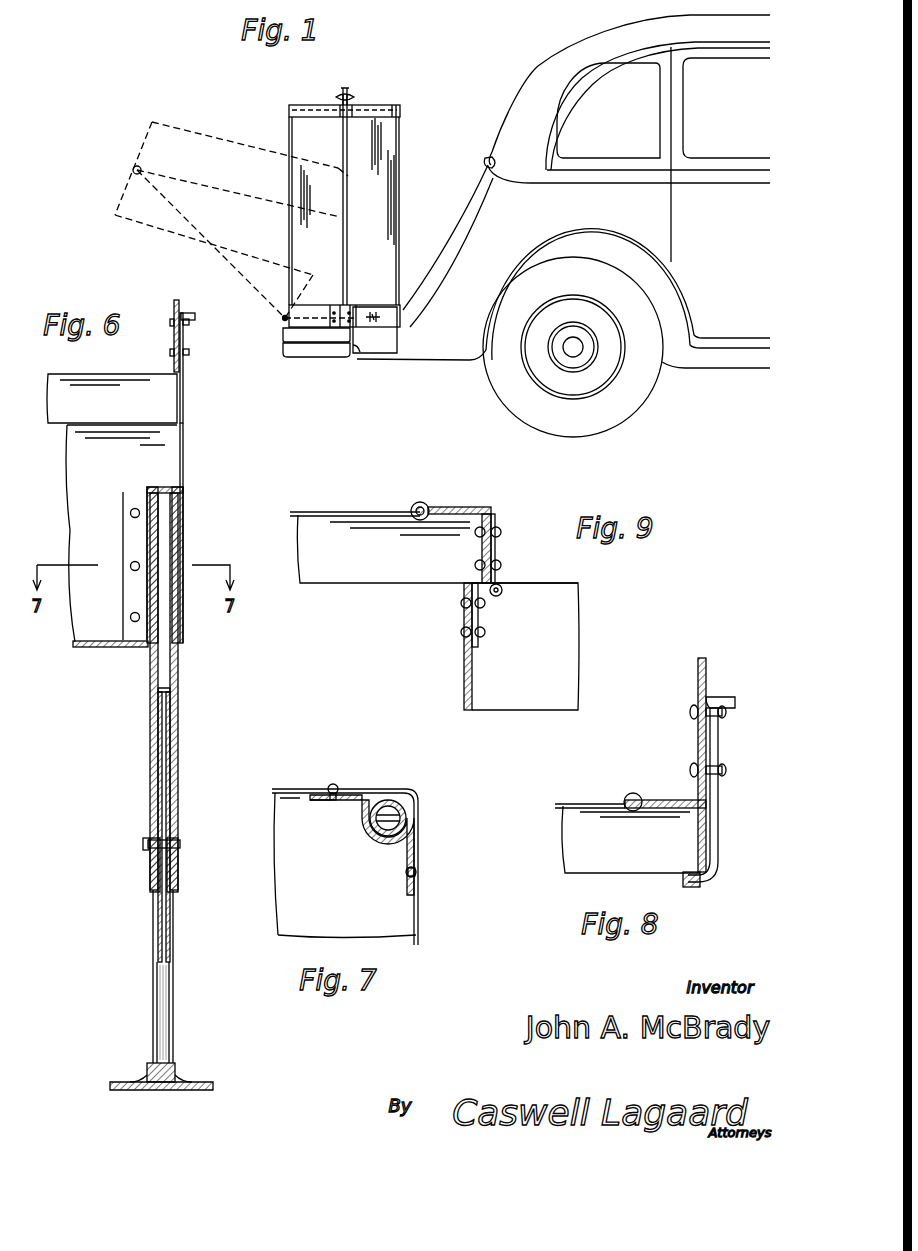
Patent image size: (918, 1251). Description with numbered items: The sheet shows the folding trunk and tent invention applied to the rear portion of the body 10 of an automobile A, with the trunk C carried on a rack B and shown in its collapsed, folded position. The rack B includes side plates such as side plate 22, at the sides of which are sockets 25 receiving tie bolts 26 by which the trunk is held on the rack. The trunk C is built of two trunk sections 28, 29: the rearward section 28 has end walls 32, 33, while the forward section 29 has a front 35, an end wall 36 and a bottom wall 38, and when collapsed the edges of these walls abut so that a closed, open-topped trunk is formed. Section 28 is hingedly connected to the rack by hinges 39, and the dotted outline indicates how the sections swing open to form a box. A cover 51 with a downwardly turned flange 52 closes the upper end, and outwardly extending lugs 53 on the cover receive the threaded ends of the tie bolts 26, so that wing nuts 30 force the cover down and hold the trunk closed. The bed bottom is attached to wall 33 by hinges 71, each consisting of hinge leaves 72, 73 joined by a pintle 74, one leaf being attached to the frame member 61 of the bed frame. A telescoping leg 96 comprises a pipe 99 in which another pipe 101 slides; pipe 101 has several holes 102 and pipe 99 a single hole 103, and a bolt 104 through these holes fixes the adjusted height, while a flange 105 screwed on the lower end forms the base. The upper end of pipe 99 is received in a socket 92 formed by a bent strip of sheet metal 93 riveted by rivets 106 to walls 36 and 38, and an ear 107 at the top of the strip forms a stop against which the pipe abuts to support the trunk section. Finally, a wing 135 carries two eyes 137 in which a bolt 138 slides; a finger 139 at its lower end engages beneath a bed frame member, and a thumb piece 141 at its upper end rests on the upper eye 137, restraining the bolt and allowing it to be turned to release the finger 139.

In FIG. 1, the automobile A is at (512, 113).
In FIG. 1, the rack B is at (368, 310).
In FIG. 1, the trunk C is at (290, 110).
In FIG. 1, the rear portion of the body 10 is at (470, 217).
In FIG. 1, the side plate 22 is at (367, 330).
In FIG. 1, the socket 25 is at (343, 323).
In FIG. 1, the tie bolt 26 is at (347, 227).
In FIG. 1, the trunk section 28 is at (300, 135).
In FIG. 1, the trunk section 29 is at (377, 168).
In FIG. 1, the wing nut 30 is at (344, 90).
In FIG. 1, the end wall 32 is at (310, 240).
In FIG. 9, the end wall 33 is at (466, 688).
In FIG. 6, the front 35 is at (98, 648).
In FIG. 7, the front 35 is at (300, 905).
In FIG. 1, the end wall 36 is at (360, 243).
In FIG. 6, the end wall 36 is at (92, 535).
In FIG. 7, the end wall 36 is at (282, 788).
In FIG. 6, the bottom wall 38 is at (183, 450).
In FIG. 7, the bottom wall 38 is at (418, 924).
In FIG. 1, the hinge 39 is at (312, 326).
In FIG. 1, the cover 51 is at (365, 110).
In FIG. 1, the flange 52 is at (392, 113).
In FIG. 1, the lug 53 is at (340, 110).
In FIG. 9, the frame member 61 is at (493, 512).
In FIG. 9, the hinge 71 is at (472, 615).
In FIG. 9, the hinge leaf 72 is at (490, 549).
In FIG. 9, the hinge leaf 73 is at (480, 645).
In FIG. 9, the pintle 74 is at (501, 592).
In FIG. 6, the socket 92 is at (147, 530).
In FIG. 7, the socket 92 is at (414, 836).
In FIG. 7, the strip of sheet metal 93 is at (372, 834).
In FIG. 6, the leg 96 is at (180, 748).
In FIG. 6, the pipe 99 is at (178, 668).
In FIG. 6, the pipe 101 is at (165, 1000).
In FIG. 6, the hole 102 is at (152, 802).
In FIG. 6, the hole 103 is at (150, 856).
In FIG. 6, the bolt 104 is at (181, 843).
In FIG. 6, the flange 105 is at (133, 1085).
In FIG. 6, the rivet 106 is at (130, 615).
In FIG. 7, the rivet 106 is at (333, 785).
In FIG. 6, the ear 107 is at (165, 486).
In FIG. 6, the wing 135 is at (174, 305).
In FIG. 8, the wing 135 is at (698, 683).
In FIG. 6, the eye 137 is at (188, 352).
In FIG. 8, the eye 137 is at (726, 716).
In FIG. 6, the bolt 138 is at (186, 378).
In FIG. 8, the bolt 138 is at (712, 705).
In FIG. 8, the finger 139 is at (693, 887).
In FIG. 6, the thumb piece 141 is at (192, 318).
In FIG. 8, the thumb piece 141 is at (733, 700).